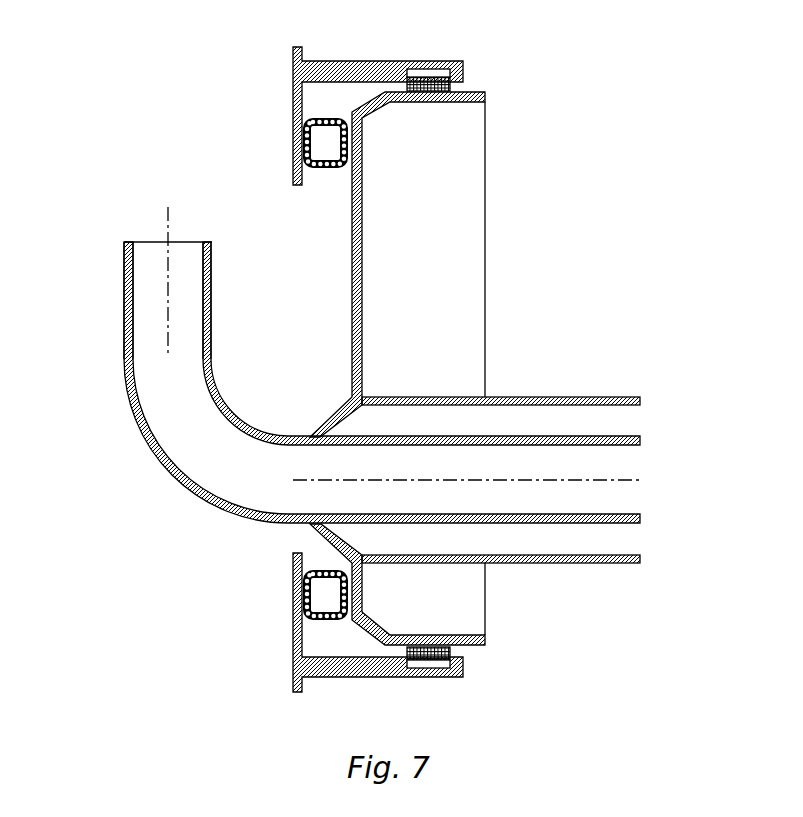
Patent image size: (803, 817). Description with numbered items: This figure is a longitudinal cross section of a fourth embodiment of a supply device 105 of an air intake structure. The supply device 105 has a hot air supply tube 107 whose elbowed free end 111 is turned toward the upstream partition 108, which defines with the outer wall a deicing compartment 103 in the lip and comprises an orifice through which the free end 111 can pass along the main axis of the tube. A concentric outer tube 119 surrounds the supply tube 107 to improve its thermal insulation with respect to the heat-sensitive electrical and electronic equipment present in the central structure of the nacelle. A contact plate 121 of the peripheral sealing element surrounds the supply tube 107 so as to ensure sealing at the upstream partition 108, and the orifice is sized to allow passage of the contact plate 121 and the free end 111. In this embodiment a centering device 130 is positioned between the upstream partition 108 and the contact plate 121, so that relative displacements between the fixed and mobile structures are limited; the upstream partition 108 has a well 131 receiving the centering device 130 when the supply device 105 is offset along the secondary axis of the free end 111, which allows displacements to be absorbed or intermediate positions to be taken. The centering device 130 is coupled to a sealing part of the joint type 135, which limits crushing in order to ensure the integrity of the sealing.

The deicing compartment 103 is at (92, 198).
The supply device 105 is at (567, 232).
The hot air supply tube 107 is at (121, 363).
The upstream partition 108 is at (293, 99).
The elbowed free end 111 is at (124, 267).
The concentric outer tube 119 is at (567, 397).
The contact plate 121 is at (350, 256).
The centering device 130 is at (450, 84).
The well 131 is at (424, 70).
The sealing part of the joint type 135 is at (323, 148).